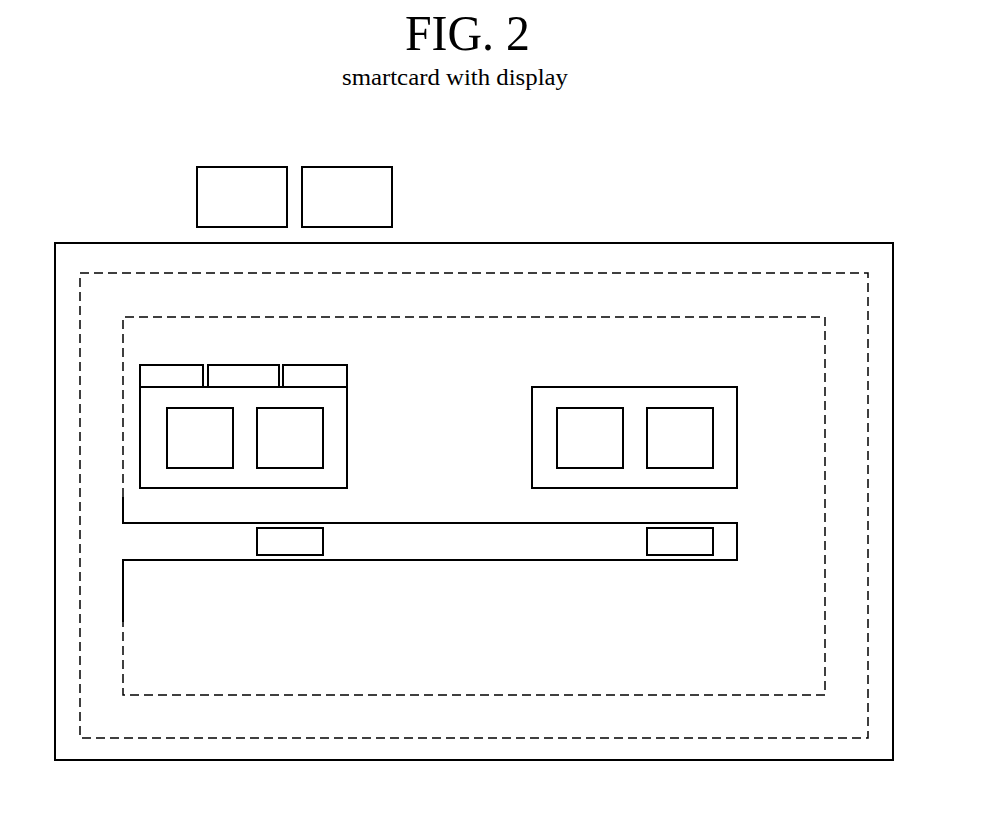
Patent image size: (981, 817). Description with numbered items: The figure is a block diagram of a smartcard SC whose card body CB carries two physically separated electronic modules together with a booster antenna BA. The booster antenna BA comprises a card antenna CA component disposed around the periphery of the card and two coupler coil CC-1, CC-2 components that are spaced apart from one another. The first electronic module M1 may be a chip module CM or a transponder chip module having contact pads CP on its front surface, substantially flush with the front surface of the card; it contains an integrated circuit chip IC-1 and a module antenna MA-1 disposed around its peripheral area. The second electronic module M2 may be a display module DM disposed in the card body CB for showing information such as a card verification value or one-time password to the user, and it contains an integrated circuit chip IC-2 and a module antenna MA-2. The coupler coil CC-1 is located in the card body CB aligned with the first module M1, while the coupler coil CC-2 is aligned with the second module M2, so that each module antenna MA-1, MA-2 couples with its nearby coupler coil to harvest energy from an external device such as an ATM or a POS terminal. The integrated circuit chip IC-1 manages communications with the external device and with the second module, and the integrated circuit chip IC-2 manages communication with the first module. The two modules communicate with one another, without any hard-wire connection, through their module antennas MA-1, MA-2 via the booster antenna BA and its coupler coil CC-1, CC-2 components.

The smartcard SC is at (118, 238).
The card antenna CA is at (474, 505).
The booster antenna BA is at (628, 316).
The card body CB is at (470, 502).
The contact pads CP is at (222, 364).
The first electronic module M1 is at (273, 429).
The chip module CM is at (273, 437).
The second electronic module M2 is at (600, 429).
The display module DM is at (600, 437).
The integrated circuit chip IC-1 is at (200, 438).
The module antenna MA-1 is at (290, 438).
The integrated circuit chip IC-2 is at (590, 438).
The module antenna MA-2 is at (680, 438).
The coupler coil component CC-1 is at (290, 541).
The coupler coil component CC-2 is at (680, 541).
The element ATM is at (242, 197).
The POS terminal POS is at (347, 197).